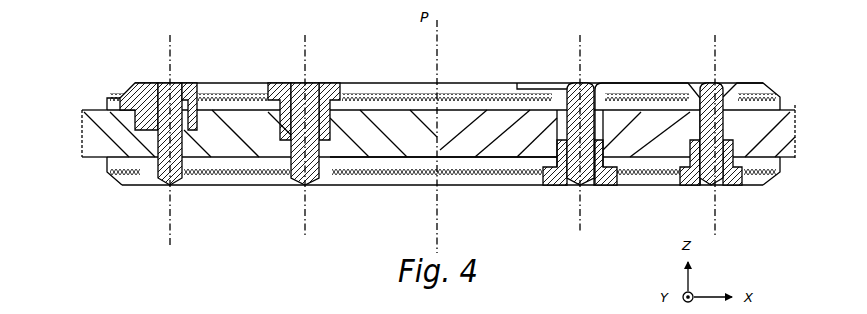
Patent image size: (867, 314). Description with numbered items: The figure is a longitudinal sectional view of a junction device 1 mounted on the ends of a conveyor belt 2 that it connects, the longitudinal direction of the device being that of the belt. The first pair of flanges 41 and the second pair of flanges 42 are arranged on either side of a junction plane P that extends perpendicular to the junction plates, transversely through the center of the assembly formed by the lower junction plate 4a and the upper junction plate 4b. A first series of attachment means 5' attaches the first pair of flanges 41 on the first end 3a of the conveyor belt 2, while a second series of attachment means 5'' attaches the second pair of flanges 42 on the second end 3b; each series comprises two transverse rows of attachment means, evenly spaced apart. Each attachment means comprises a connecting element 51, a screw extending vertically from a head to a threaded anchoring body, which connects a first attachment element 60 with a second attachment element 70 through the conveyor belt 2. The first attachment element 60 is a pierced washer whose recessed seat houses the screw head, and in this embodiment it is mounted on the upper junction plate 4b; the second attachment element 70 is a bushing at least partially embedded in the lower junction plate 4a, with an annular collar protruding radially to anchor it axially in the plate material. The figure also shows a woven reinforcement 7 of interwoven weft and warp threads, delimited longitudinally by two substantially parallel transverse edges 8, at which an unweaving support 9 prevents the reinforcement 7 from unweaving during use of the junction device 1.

The junction device 1 is at (781, 72).
The conveyor belt 2 is at (82, 117).
The first end of the conveyor belt 3a is at (509, 127).
The second end of the conveyor belt 3b is at (420, 186).
The lower junction plate 4a is at (485, 186).
The upper junction plate 4b is at (360, 82).
The first series of attachment means 5' is at (660, 102).
The second series of attachment means 5'' is at (253, 164).
The woven reinforcement 7 is at (451, 82).
The transverse edges 8 is at (121, 82).
The unweaving support 9 is at (118, 92).
The first pair of flanges 41 is at (760, 54).
The second pair of flanges 42 is at (237, 50).
The connecting element 51 is at (158, 196).
The first attachment element 60 is at (531, 82).
The second attachment element 70 is at (185, 82).